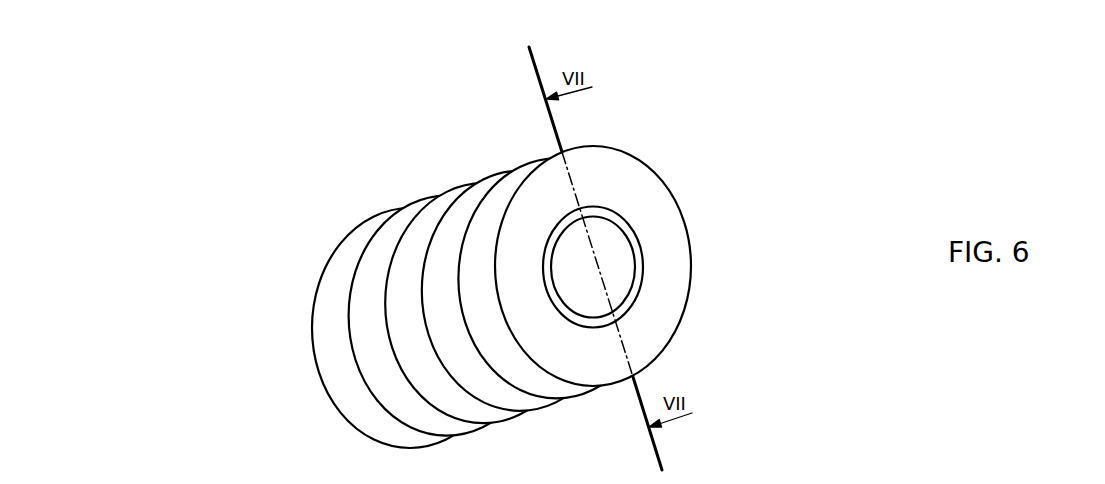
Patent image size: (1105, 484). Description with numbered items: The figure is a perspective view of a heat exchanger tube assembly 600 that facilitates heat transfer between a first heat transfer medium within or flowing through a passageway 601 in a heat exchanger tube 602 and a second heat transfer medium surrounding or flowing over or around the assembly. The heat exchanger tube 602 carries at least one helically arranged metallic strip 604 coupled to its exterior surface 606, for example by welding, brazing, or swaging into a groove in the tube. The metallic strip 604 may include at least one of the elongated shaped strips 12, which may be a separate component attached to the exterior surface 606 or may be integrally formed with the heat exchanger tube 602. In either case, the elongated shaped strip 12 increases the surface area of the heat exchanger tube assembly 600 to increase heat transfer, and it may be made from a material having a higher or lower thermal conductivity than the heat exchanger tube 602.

The heat exchanger tube assembly 600 is at (506, 273).
The helically arranged metallic strip 604 is at (497, 175).
The elongated shaped strip 12 is at (647, 163).
The exterior surface 606 is at (657, 262).
The passageway 601 is at (625, 248).
The heat exchanger tube 602 is at (596, 284).